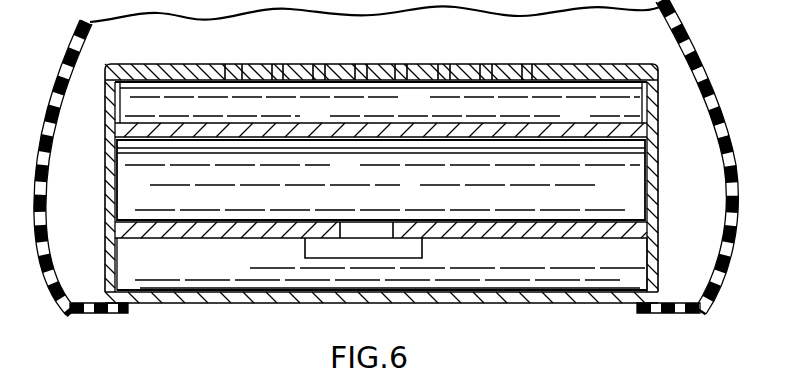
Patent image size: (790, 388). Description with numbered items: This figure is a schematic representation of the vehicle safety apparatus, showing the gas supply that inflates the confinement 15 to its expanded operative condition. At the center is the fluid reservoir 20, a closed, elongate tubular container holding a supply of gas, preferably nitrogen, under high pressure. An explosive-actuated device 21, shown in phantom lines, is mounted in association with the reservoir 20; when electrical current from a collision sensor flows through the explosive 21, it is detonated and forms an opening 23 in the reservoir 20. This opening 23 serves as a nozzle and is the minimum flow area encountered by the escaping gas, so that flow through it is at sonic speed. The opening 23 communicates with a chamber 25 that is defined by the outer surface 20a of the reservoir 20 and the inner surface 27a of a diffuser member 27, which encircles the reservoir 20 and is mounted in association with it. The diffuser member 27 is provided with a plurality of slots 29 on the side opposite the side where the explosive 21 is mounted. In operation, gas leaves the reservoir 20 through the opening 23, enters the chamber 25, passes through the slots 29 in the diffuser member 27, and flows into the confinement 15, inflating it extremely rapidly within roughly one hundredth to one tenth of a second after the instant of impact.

The confinement 15 is at (698, 47).
The fluid reservoir 20 is at (660, 158).
The outer surface of the reservoir 20a is at (600, 238).
The explosive-actuated device 21 is at (422, 252).
The opening 23 is at (378, 228).
The chamber 25 is at (635, 264).
The diffuser member 27 is at (200, 294).
The inner surface of the diffuser member 27a is at (290, 283).
The slots 29 is at (233, 70).